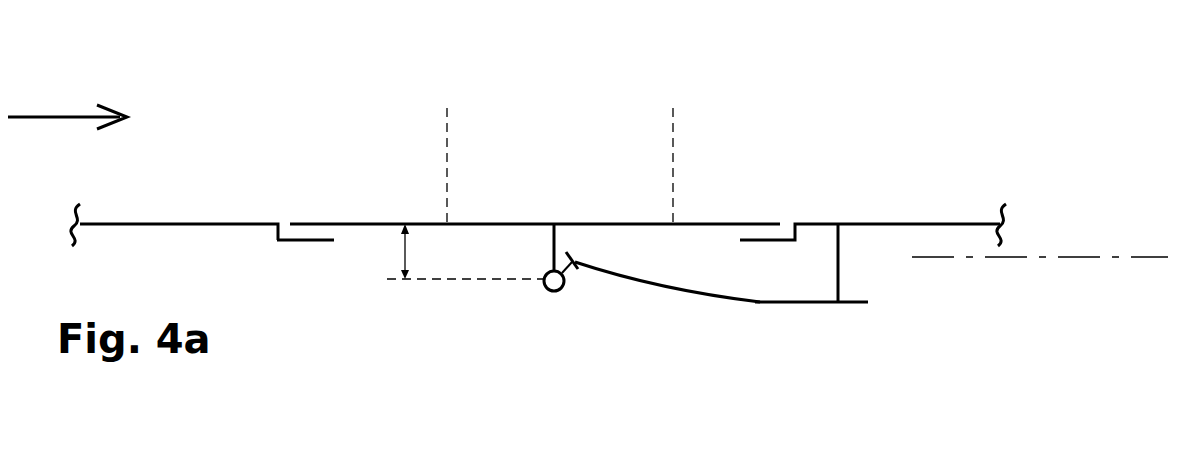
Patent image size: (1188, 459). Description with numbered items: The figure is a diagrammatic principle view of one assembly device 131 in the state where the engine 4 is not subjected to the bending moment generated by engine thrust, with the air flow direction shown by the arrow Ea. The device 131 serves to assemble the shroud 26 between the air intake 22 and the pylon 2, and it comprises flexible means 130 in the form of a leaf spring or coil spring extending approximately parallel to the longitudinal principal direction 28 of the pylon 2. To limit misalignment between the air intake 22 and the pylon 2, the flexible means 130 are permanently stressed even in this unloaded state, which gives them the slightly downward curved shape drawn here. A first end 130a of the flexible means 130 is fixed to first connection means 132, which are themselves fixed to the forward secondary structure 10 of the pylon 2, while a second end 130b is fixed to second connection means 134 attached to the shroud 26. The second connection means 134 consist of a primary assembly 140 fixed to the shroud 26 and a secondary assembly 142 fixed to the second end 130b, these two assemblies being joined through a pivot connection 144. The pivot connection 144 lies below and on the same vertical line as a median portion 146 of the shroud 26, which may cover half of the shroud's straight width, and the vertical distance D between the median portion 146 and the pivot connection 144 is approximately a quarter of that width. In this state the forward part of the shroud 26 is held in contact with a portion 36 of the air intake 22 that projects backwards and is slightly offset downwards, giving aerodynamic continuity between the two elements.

The air flow direction arrow Ea is at (60, 116).
The pylon 2 is at (877, 213).
The engine 4 is at (119, 212).
The forward secondary structure 10 is at (946, 223).
The air intake 22 is at (203, 222).
The shroud 26 is at (376, 222).
The longitudinal principal direction 28 is at (1128, 258).
The portion of the air intake 36 is at (304, 240).
The vertical distance D is at (458, 251).
The flexible means 130 is at (757, 312).
The first end of the flexible means 130a is at (850, 304).
The second end of the flexible means 130b is at (572, 255).
The assembly device 131 is at (677, 318).
The first connection means 132 is at (850, 265).
The second connection means 134 is at (537, 258).
The primary assembly 140 is at (550, 250).
The secondary assembly 142 is at (566, 271).
The pivot connection 144 is at (556, 292).
The median portion 146 is at (673, 106).